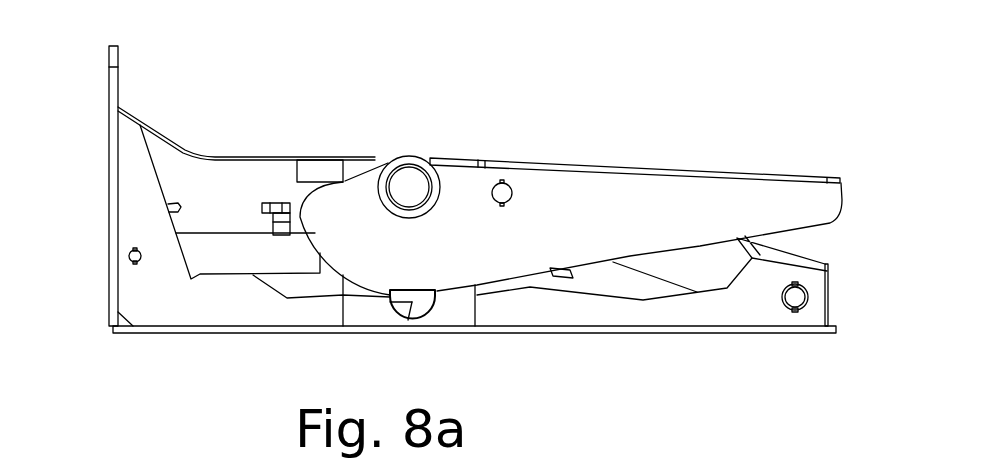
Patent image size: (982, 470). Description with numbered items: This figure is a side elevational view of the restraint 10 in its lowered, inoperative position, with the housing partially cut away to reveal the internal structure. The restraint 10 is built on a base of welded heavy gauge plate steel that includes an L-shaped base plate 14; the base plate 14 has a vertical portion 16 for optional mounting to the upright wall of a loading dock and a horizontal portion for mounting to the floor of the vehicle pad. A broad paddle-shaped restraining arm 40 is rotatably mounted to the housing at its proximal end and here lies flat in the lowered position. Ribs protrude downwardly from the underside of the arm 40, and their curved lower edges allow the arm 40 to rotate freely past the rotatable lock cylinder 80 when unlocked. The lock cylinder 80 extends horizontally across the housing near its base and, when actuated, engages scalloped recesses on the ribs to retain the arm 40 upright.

The restraint 10 is at (412, 123).
The base plate 14 is at (305, 325).
The vertical portion 16 is at (112, 170).
The restraining arm 40 is at (733, 175).
The lock cylinder 80 is at (420, 307).